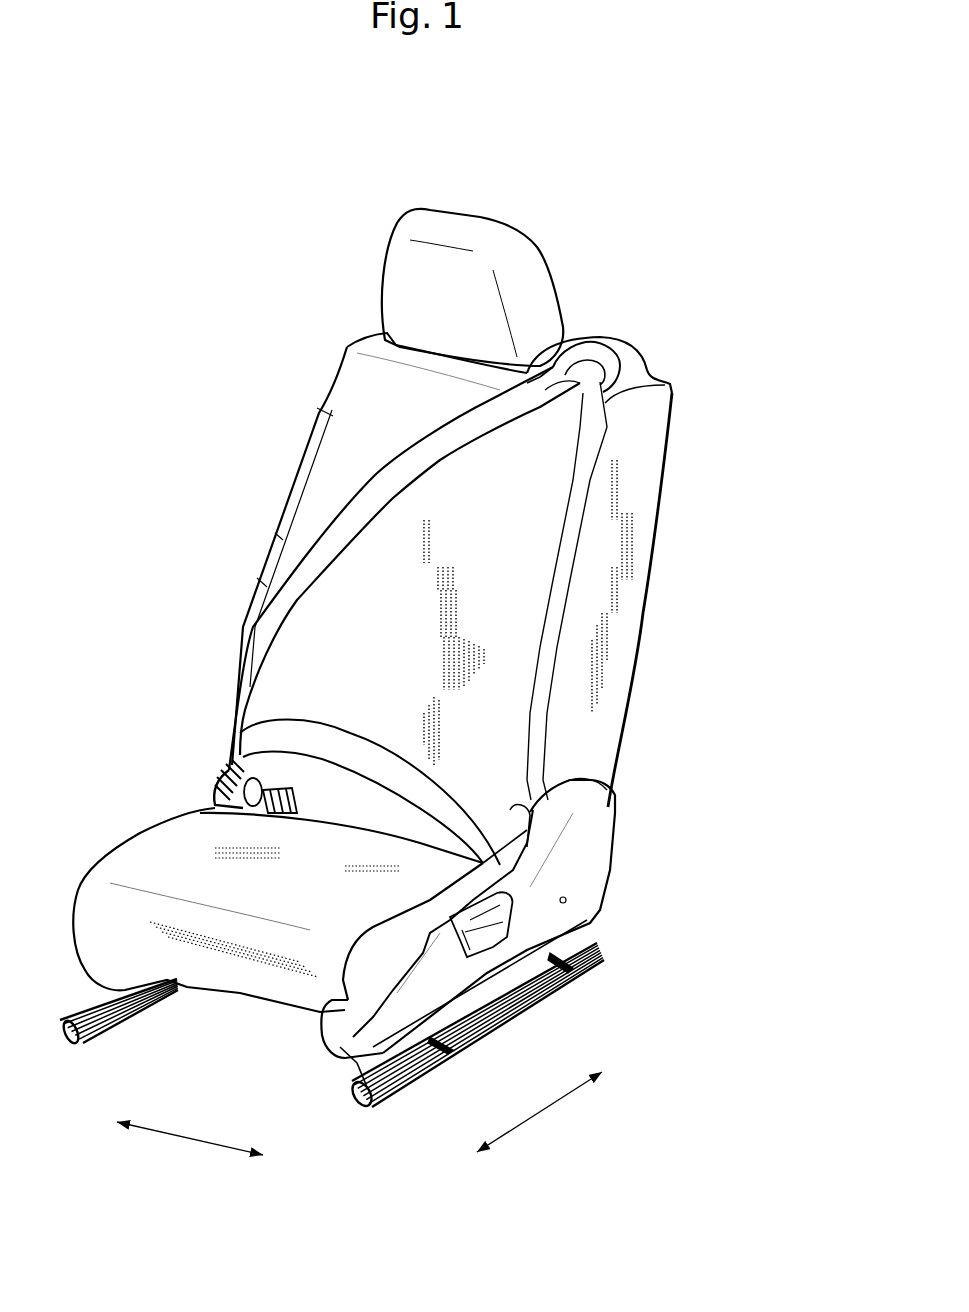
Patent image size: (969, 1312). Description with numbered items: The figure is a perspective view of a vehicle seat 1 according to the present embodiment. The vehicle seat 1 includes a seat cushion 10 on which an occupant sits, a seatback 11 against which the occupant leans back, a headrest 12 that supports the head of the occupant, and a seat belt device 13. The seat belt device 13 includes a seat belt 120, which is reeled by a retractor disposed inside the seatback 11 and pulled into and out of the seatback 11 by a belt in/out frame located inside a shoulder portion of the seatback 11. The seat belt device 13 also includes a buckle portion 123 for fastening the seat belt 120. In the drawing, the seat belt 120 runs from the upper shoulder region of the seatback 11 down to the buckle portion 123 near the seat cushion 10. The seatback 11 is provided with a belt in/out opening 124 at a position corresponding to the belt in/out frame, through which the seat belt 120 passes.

The vehicle seat 1 is at (280, 216).
The seat cushion 10 is at (140, 832).
The seatback 11 is at (680, 385).
The headrest 12 is at (540, 303).
The seat belt device 13 is at (355, 490).
The seat belt 120 is at (310, 545).
The buckle portion 123 is at (217, 778).
The belt in/out opening 124 is at (573, 353).